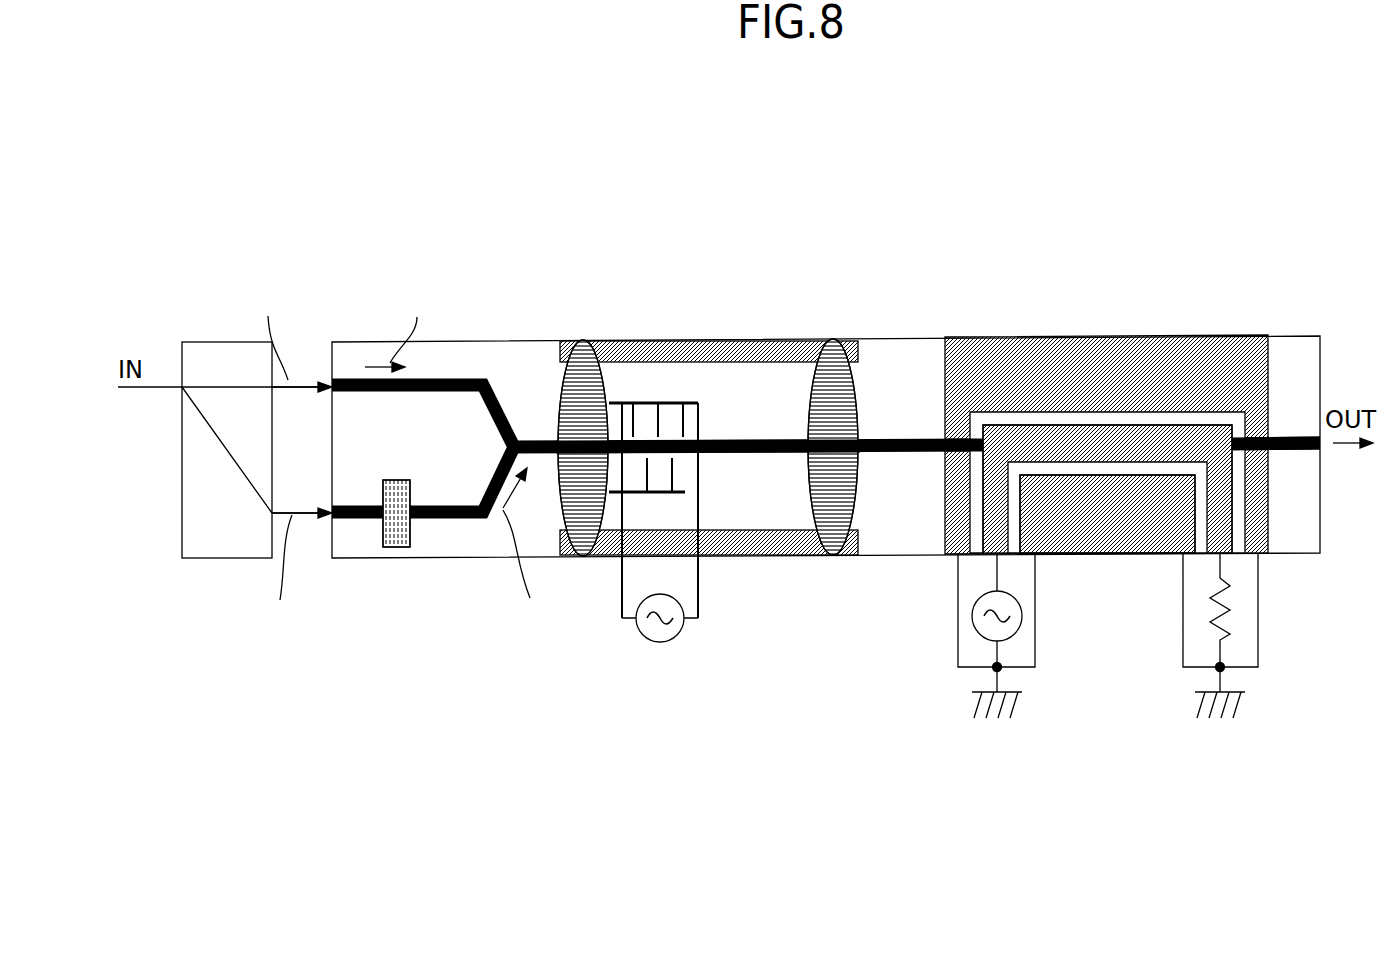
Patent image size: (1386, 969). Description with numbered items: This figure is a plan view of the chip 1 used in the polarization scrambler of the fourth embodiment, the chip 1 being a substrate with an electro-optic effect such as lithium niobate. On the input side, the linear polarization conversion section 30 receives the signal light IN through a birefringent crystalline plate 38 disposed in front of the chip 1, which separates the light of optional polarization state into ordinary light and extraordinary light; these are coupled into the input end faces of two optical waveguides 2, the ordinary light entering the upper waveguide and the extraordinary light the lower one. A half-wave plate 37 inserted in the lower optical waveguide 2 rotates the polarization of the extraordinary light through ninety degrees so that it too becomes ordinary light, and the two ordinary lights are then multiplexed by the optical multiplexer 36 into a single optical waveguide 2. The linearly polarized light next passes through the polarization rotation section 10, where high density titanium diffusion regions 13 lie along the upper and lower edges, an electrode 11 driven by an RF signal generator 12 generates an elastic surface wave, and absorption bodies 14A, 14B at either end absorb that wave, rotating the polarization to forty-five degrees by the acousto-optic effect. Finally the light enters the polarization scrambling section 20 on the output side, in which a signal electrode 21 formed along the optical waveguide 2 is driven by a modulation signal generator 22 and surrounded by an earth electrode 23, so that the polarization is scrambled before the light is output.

The chip 1 is at (372, 340).
The optical waveguide 2 is at (331, 380).
The polarization rotation section 10 is at (844, 252).
The electrode 11 is at (690, 402).
The RF signal generator 12 is at (675, 637).
The high density titanium diffusion regions 13 is at (733, 340).
The absorption body 14A is at (585, 341).
The absorption body 14B is at (834, 340).
The polarization scrambling section 20 is at (1256, 249).
The signal electrode 21 is at (1207, 422).
The modulation signal generator 22 is at (971, 617).
The earth electrode 23 is at (968, 337).
The linear polarization conversion section 30 is at (508, 254).
The optical multiplexer 36 is at (524, 438).
The half-wave plate 37 is at (397, 556).
The birefringent crystalline plate 38 is at (220, 342).